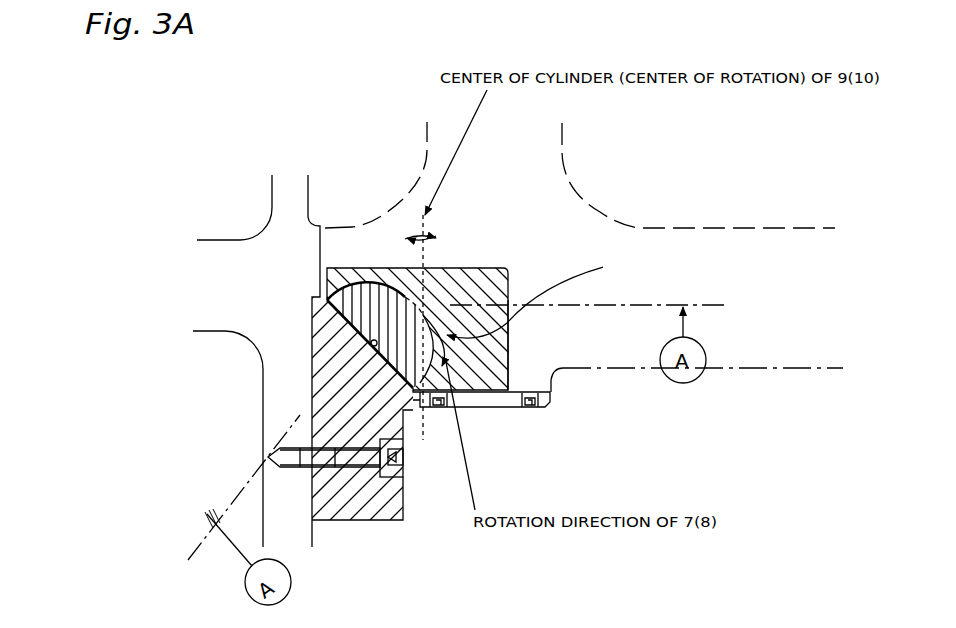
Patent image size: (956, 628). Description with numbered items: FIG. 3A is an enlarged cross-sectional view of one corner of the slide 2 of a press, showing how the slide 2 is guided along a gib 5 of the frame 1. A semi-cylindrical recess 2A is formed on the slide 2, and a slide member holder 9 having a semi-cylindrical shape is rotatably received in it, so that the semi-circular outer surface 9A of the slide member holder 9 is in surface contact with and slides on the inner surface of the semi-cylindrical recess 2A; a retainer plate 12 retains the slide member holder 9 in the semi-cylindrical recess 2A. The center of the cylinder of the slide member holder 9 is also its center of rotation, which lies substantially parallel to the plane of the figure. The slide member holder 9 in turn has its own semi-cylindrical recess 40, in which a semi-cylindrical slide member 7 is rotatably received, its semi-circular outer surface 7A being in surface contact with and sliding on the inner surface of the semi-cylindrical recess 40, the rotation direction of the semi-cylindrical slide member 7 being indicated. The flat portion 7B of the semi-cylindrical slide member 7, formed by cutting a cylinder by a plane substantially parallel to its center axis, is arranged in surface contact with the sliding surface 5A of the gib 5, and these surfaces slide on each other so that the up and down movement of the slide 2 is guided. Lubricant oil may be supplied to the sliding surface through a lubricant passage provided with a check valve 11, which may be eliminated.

The housing wall 1 is at (203, 236).
The slide 2 is at (798, 352).
The semi-cylindrical recess 2A is at (470, 267).
The gib 5 is at (380, 509).
The sliding surface 5A is at (330, 297).
The semi-cylindrical slide member 7 is at (358, 321).
The semi-circular outer surface 7A is at (388, 280).
The flat portion 7B is at (333, 325).
The slide member holder 9 is at (489, 302).
The semi-circular outer surface 9A is at (511, 347).
The check valve 11 is at (370, 346).
The retainer plate 12 is at (489, 404).
The semi-cylindrical recess 40 is at (527, 312).